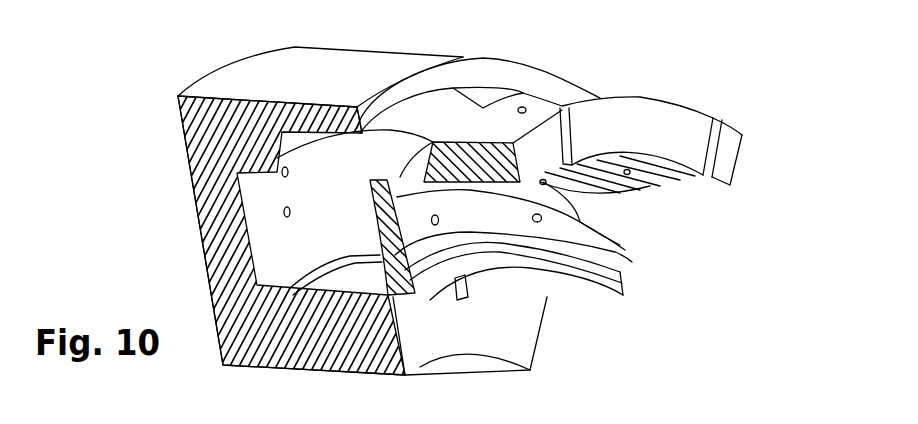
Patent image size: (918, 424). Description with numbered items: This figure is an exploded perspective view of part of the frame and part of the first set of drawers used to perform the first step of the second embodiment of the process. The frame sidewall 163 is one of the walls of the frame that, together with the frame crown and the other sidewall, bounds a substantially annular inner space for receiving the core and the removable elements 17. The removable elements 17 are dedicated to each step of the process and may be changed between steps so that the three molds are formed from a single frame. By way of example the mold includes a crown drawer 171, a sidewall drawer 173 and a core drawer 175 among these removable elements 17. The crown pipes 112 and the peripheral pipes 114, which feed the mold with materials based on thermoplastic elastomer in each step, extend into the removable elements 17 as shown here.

The frame sidewall 163 is at (243, 88).
The removable elements 17 is at (721, 103).
The crown drawer 171 is at (732, 157).
The crown pipes 112 is at (519, 109).
The peripheral pipes 114 is at (633, 239).
The core drawer 175 is at (620, 278).
The sidewall drawer 173 is at (558, 291).